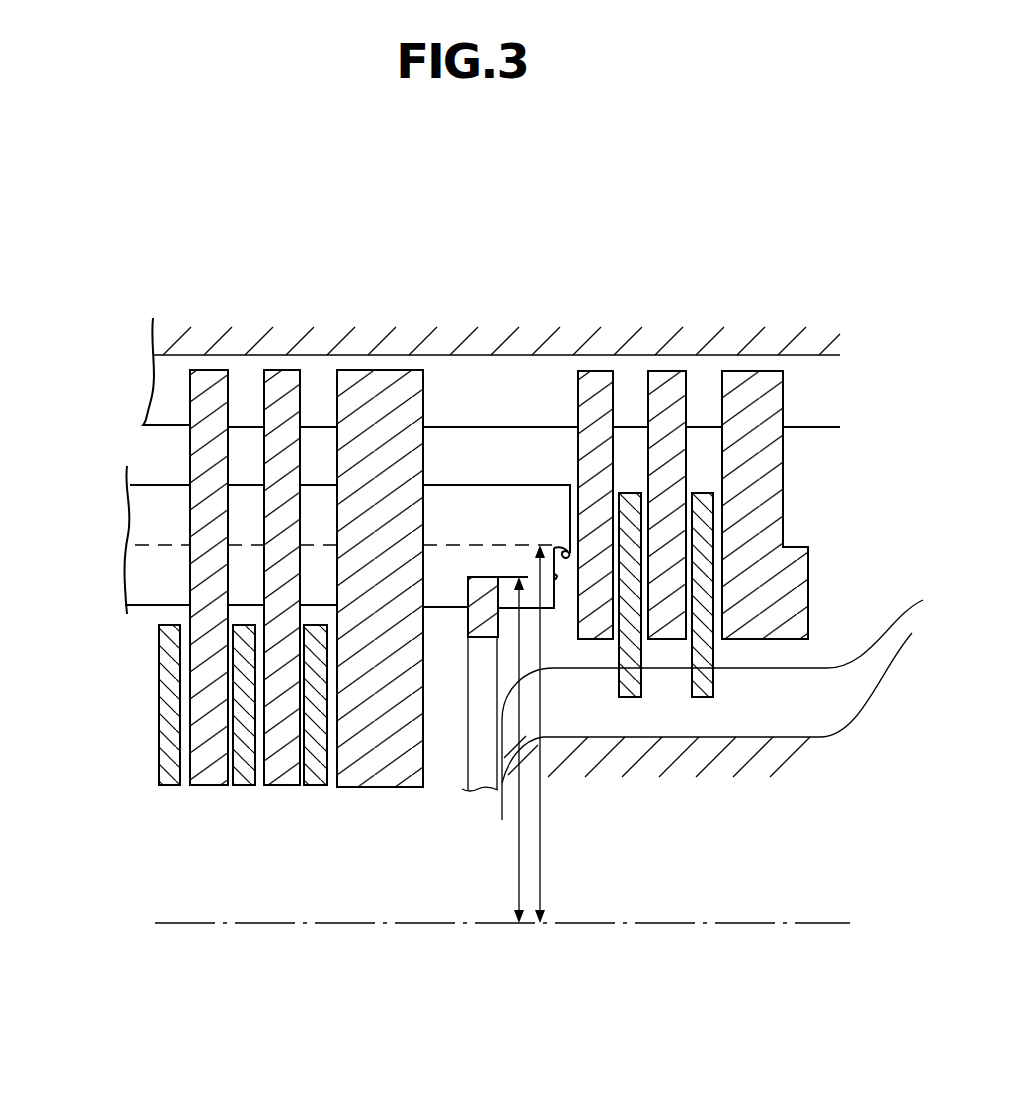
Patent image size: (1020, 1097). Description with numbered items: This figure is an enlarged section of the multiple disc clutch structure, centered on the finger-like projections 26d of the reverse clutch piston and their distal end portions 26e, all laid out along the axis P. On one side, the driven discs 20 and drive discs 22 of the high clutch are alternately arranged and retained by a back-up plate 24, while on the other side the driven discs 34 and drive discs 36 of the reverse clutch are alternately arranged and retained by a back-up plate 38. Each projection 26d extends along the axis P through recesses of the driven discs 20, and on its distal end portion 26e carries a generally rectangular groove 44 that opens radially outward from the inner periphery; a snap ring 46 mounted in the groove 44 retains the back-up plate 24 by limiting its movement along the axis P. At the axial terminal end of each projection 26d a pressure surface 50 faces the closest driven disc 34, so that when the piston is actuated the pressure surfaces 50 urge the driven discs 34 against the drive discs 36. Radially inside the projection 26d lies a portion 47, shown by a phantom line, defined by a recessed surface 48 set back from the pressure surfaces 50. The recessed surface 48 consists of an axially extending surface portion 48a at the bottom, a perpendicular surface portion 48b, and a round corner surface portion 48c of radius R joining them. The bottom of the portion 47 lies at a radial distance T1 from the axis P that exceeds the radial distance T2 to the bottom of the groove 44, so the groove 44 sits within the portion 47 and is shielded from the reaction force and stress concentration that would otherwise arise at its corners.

The driven discs 20 is at (288, 378).
The drive discs 22 is at (312, 778).
The back-up plate 24 is at (390, 782).
The finger-like projections 26d is at (150, 494).
The distal end portions 26e is at (520, 468).
The driven discs 34 is at (670, 378).
The drive discs 36 is at (705, 677).
The back-up plate 38 is at (755, 378).
The groove 44 is at (470, 597).
The snap ring 46 is at (478, 640).
The portion 47 is at (447, 583).
The recessed surface 48 is at (557, 597).
The axially extending surface portion 48a is at (554, 548).
The perpendicular surface portion 48b is at (553, 572).
The round corner surface portion 48c is at (548, 546).
The pressure surfaces 50 is at (575, 508).
The radius of curvature R is at (567, 557).
The radial distance T1 is at (541, 850).
The radial distance T2 is at (518, 848).
The axis P is at (590, 925).